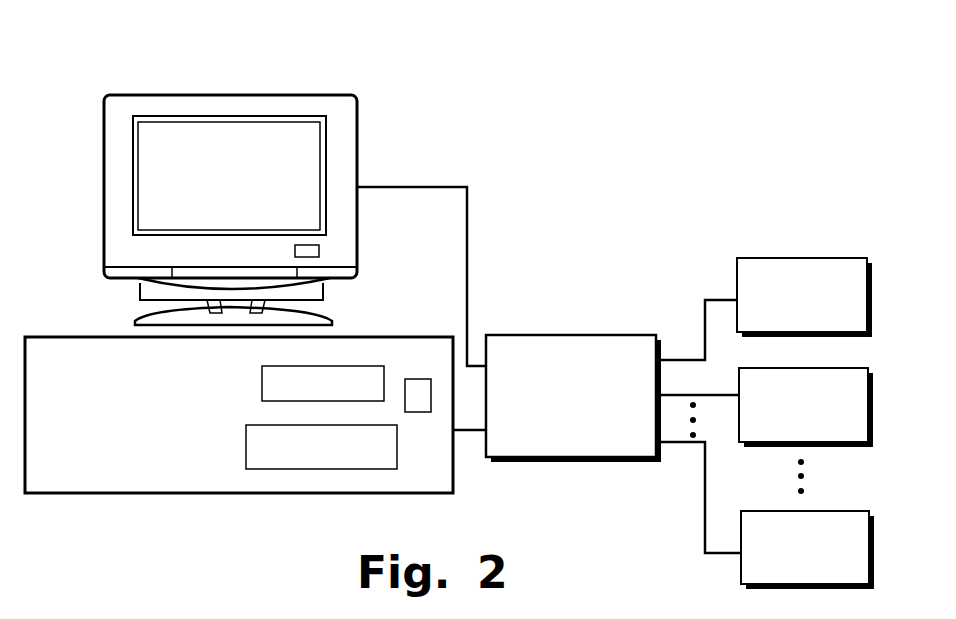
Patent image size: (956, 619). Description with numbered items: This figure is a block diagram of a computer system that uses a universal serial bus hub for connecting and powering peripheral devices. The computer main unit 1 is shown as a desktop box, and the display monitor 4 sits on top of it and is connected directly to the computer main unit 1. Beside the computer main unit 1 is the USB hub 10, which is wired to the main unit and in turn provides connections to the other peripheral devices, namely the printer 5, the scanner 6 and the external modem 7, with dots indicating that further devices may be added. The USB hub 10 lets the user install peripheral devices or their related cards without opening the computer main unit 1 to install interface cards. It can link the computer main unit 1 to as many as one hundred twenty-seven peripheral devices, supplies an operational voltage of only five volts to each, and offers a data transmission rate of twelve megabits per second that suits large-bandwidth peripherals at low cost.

The computer main unit 1 is at (100, 337).
The display monitor 4 is at (223, 95).
The universal serial bus (USB) hub 10 is at (560, 334).
The printer 5 is at (868, 297).
The scanner 6 is at (868, 384).
The external modem 7 is at (869, 543).